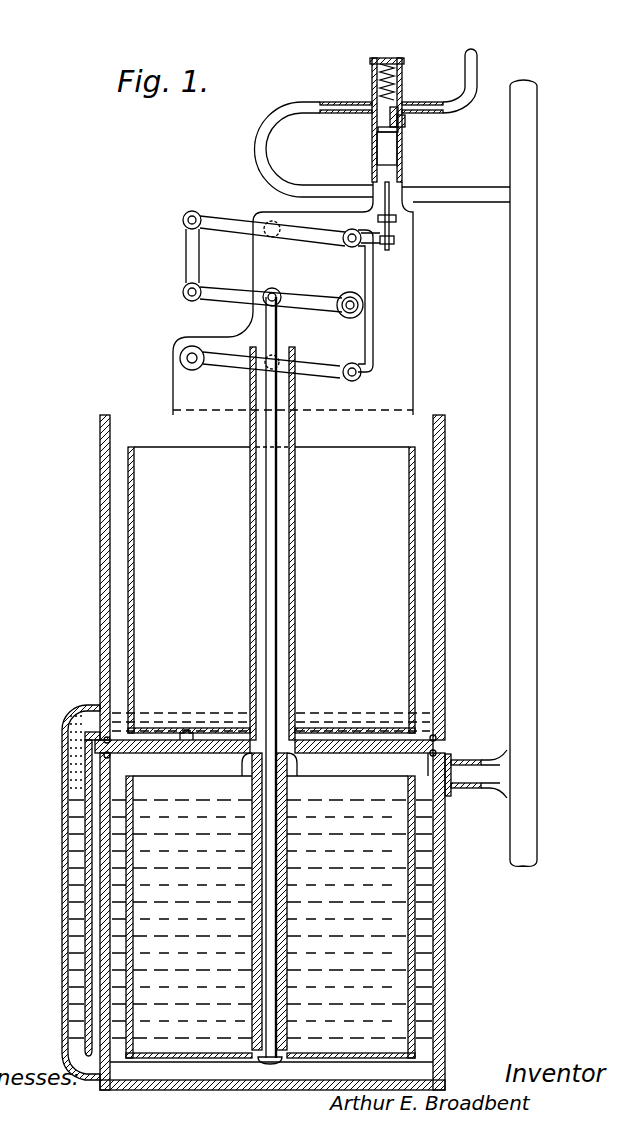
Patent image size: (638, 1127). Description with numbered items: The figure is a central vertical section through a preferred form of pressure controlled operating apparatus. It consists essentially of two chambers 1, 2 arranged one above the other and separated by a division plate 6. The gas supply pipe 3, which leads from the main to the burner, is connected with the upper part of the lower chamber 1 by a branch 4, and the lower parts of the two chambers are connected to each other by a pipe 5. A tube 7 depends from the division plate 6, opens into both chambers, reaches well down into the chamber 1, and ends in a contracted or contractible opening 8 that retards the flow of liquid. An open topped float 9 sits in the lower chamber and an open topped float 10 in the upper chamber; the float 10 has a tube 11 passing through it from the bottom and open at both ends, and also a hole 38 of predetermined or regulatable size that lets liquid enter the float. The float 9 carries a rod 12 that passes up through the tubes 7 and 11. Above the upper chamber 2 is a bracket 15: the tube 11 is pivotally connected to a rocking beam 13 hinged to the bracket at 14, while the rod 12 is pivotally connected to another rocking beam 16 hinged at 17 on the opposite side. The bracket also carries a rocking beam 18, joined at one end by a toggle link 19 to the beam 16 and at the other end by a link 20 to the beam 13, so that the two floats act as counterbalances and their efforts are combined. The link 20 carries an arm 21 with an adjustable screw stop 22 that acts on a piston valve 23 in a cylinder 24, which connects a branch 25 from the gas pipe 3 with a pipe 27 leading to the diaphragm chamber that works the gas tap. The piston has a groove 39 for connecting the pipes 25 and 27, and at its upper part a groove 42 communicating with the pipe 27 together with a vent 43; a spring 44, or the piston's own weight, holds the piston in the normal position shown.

The chamber 1 is at (110, 940).
The chamber 2 is at (108, 545).
The gas supply pipe 3 is at (533, 233).
The branch 4 is at (458, 776).
The pipe 5 is at (75, 897).
The division plate 6 is at (385, 745).
The tube 7 is at (252, 942).
The contracted opening 8 is at (283, 1050).
The float 9 is at (400, 962).
The float 10 is at (271, 590).
The tube 11 is at (305, 545).
The rod 12 is at (270, 471).
The rocking beam 13 is at (222, 374).
The hinge 14 is at (180, 360).
The bracket 15 is at (395, 360).
The rocking beam 16 is at (310, 294).
The hinge 17 is at (363, 305).
The rocking beam 18 is at (226, 224).
The toggle link 19 is at (184, 255).
The link 20 is at (373, 330).
The arm 21 is at (395, 242).
The adjustable screw stop 22 is at (397, 220).
The piston valve 23 is at (392, 160).
The cylinder 24 is at (402, 146).
The branch 25 is at (322, 95).
The pipe 27 is at (476, 73).
The hole 38 is at (185, 730).
The groove 39 is at (392, 132).
The groove 42 is at (392, 118).
The vent 43 is at (406, 125).
The spring 44 is at (412, 52).